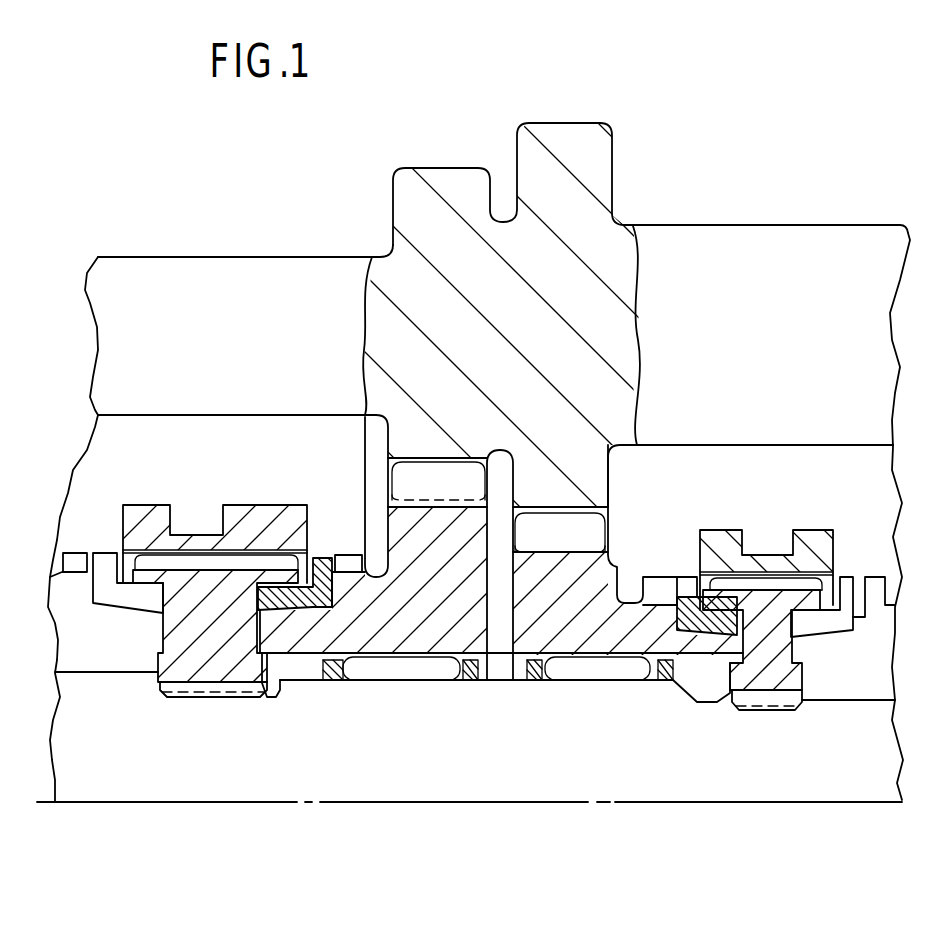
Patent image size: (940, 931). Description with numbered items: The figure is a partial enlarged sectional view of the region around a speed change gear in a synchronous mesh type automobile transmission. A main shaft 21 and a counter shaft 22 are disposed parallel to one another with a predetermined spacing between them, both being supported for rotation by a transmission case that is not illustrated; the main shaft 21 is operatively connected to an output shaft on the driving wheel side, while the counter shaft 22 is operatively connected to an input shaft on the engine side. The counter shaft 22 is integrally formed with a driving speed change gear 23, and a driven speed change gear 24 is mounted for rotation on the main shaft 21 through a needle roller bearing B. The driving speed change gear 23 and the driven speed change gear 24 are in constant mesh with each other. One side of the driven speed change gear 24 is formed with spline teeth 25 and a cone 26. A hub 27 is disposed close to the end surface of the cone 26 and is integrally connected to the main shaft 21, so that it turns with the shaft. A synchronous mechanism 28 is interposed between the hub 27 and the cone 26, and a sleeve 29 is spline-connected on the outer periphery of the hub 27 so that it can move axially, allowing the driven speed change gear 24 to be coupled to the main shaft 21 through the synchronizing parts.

The main shaft 21 is at (108, 785).
The counter shaft 22 is at (143, 278).
The driving speed change gear 23 is at (400, 200).
The driven speed change gear 24 is at (388, 522).
The spline teeth 25 is at (348, 563).
The cone 26 is at (295, 633).
The hub 27 is at (210, 672).
The synchronous mechanism 28 is at (322, 522).
The sleeve 29 is at (150, 515).
The needle roller bearing B is at (392, 688).